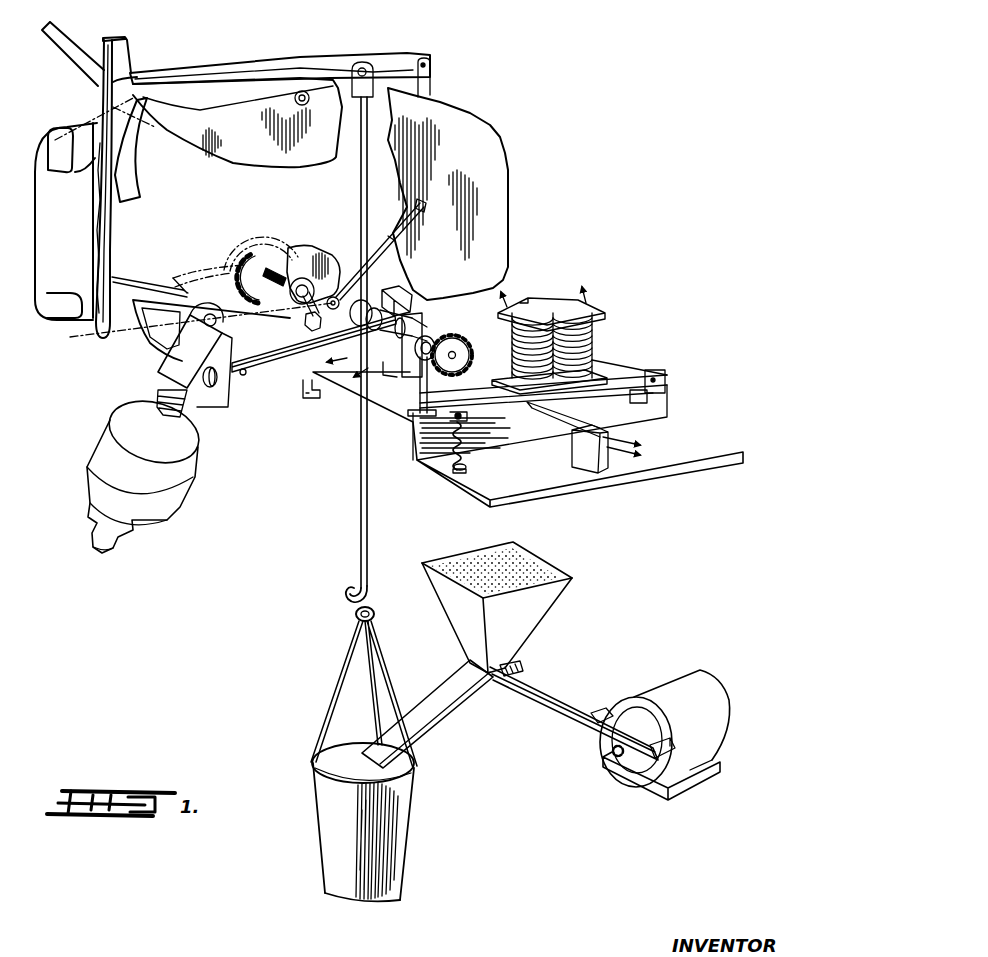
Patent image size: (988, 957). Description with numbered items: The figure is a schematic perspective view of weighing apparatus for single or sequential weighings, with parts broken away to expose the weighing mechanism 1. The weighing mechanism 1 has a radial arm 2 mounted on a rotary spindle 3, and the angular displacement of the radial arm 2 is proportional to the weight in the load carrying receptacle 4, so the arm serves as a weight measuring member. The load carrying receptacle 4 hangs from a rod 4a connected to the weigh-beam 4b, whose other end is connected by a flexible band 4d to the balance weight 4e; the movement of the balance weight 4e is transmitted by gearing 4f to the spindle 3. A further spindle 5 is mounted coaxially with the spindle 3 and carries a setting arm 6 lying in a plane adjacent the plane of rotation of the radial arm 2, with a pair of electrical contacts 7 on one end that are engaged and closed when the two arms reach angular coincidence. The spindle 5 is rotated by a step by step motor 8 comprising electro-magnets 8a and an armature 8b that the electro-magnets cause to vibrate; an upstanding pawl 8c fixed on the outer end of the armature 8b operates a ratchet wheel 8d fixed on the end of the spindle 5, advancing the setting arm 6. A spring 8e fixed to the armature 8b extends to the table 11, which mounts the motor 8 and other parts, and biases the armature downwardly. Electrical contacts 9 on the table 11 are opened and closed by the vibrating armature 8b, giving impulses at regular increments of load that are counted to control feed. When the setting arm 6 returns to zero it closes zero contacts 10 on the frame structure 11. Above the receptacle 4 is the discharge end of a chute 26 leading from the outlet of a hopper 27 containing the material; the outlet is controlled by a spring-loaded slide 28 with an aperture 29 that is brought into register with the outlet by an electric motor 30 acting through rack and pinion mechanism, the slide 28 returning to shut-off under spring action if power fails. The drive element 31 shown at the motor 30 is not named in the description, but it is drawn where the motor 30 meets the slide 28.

The weighing mechanism 1 is at (281, 52).
The radial arm 2 is at (389, 238).
The rotary spindle 3 is at (324, 272).
The load carrying receptacle 4 is at (405, 827).
The rod 4a is at (377, 520).
The weigh-beam 4b is at (381, 62).
The flexible band 4d is at (112, 247).
The balance weight 4e is at (187, 478).
The gearing 4f is at (240, 247).
The further spindle 5 is at (380, 292).
The setting arm 6 is at (310, 353).
The electrical contacts 7 is at (240, 384).
The motor 8 is at (510, 420).
The electro-magnets 8a is at (544, 357).
The armature 8b is at (445, 407).
The upstanding pawl 8c is at (421, 395).
The ratchet wheel 8d is at (463, 342).
The spring 8e is at (466, 458).
The electrical contacts 9 is at (540, 413).
The zero contacts 10 is at (315, 398).
The table 11 is at (408, 448).
The chute 26 is at (447, 707).
The hopper 27 is at (543, 603).
The slide 28 is at (570, 694).
The aperture 29 is at (522, 669).
The electric motor 30 is at (693, 677).
The drive gear 31 is at (620, 758).